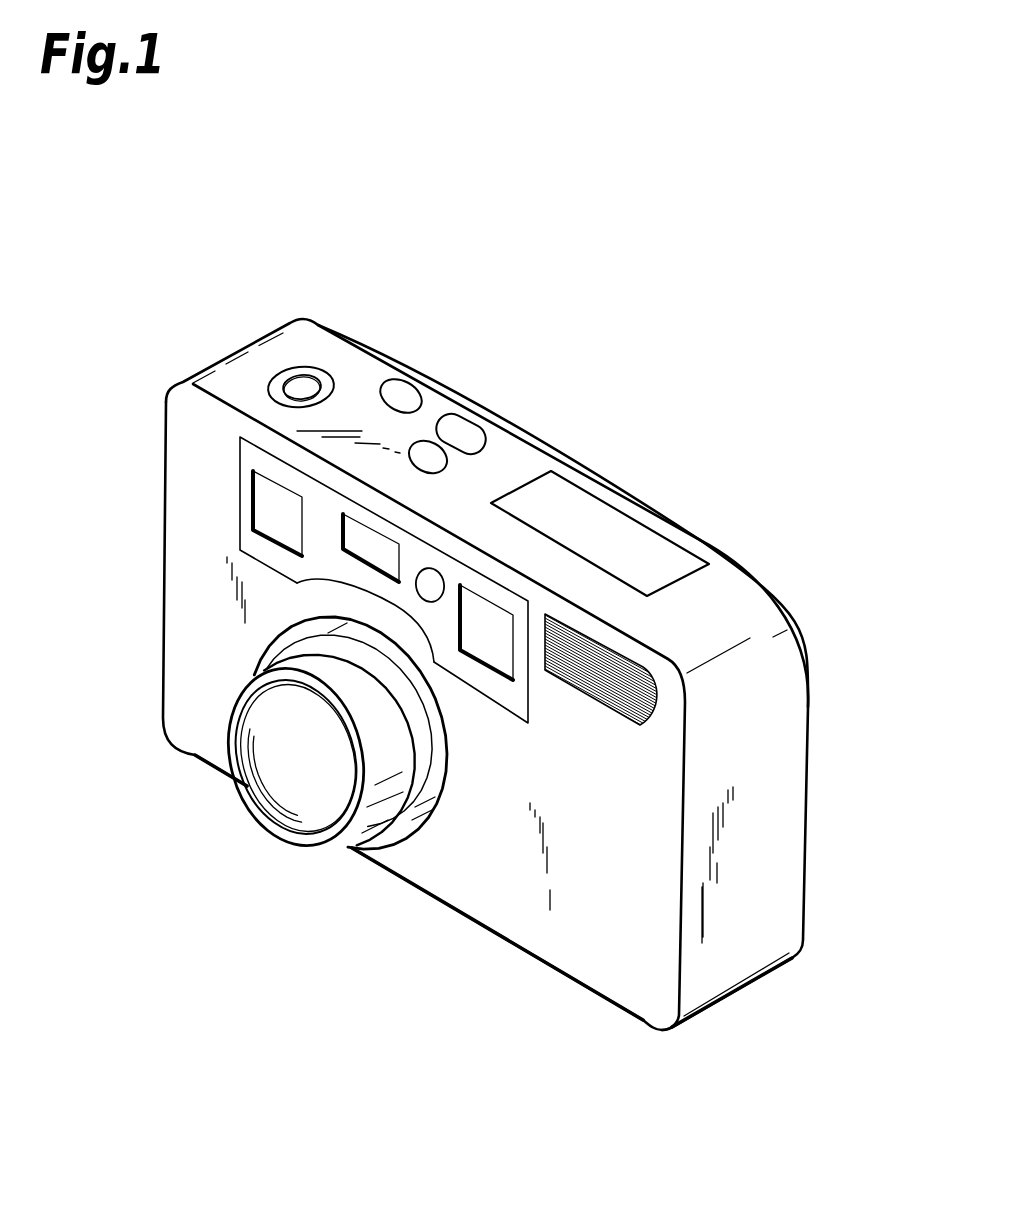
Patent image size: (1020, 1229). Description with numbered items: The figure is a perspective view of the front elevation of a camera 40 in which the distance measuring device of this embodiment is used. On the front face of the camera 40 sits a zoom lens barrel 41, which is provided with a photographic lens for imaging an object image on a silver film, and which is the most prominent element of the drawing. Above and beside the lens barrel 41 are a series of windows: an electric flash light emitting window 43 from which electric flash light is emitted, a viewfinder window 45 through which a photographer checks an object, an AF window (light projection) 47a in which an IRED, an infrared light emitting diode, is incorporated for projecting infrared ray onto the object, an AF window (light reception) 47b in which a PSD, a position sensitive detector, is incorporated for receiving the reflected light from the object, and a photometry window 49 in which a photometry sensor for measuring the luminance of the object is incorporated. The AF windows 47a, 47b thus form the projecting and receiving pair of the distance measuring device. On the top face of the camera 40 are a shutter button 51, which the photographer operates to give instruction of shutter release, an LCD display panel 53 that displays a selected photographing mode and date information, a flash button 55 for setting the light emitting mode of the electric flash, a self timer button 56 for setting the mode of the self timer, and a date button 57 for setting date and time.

The camera 40 is at (571, 433).
The zoom lens barrel 41 is at (323, 803).
The electric flash light emitting window 43 is at (617, 672).
The viewfinder window 45 is at (372, 545).
The AF window (light projection) 47a is at (264, 500).
The AF window (light reception) 47b is at (490, 650).
The photometry window 49 is at (432, 590).
The shutter button 51 is at (302, 383).
The LCD display panel 53 is at (600, 533).
The flash button 55 is at (405, 393).
The self timer button 56 is at (468, 436).
The date button 57 is at (430, 457).